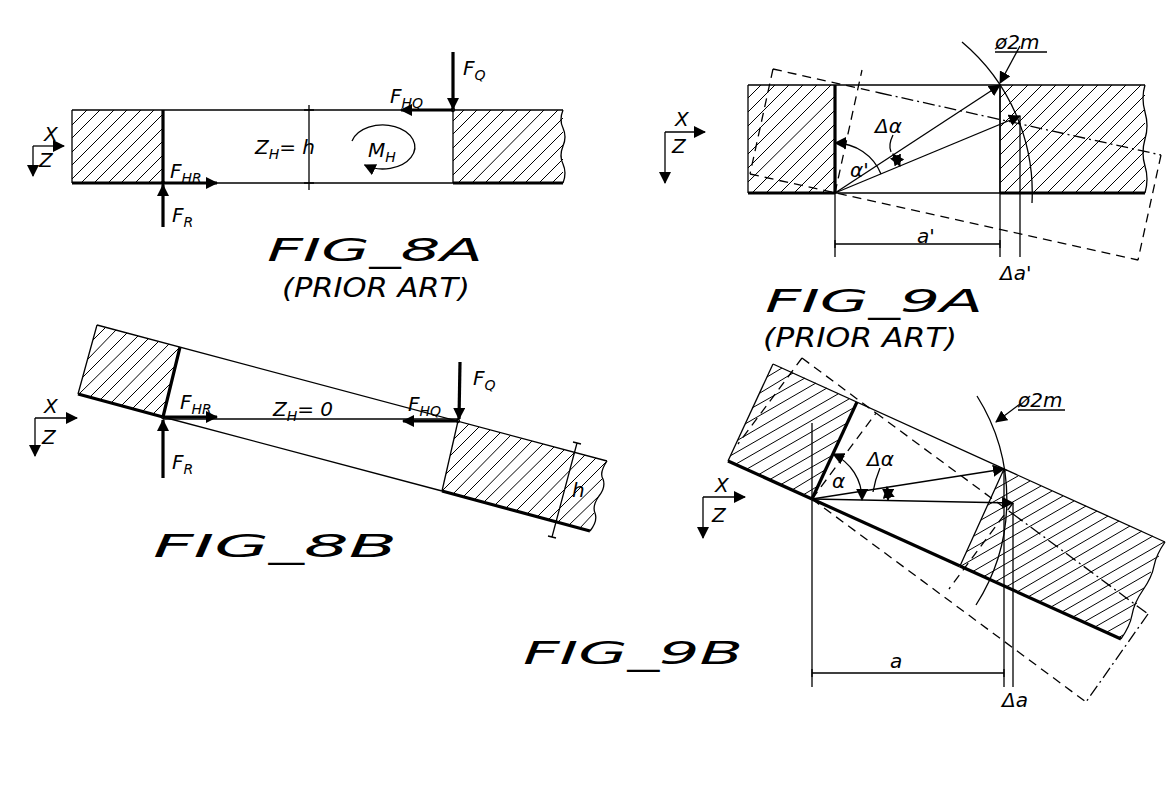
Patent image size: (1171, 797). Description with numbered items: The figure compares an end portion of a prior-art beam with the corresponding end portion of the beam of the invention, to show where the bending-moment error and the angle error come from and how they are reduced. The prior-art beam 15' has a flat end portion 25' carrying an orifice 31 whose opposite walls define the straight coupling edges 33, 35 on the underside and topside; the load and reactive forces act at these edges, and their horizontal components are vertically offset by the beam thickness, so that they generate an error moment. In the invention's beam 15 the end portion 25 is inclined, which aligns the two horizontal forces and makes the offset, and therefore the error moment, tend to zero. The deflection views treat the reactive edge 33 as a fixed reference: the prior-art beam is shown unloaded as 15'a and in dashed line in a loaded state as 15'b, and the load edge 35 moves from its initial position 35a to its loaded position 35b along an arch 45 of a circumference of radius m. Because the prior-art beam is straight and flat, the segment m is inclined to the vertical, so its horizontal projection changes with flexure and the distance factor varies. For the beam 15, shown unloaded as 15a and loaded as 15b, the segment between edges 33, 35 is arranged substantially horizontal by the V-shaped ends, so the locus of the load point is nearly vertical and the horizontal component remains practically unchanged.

In FIG. 8B, the beam 15 is at (342, 429).
In FIG. 8A, the prior art beam 15' is at (317, 146).
In FIG. 9B, the beam in unloaded state 15a is at (1121, 523).
In FIG. 9A, the prior art beam in unloaded state 15'a is at (1085, 124).
In FIG. 9B, the beam in loaded state 15b is at (1085, 667).
In FIG. 9A, the prior art beam in loaded state 15'b is at (955, 178).
In FIG. 8B, the end portion 25 is at (342, 428).
In FIG. 9B, the end portion 25 is at (791, 496).
In FIG. 8A, the prior art end portion 25' is at (318, 115).
In FIG. 9A, the prior art end portion 25' is at (791, 106).
In FIG. 8A, the orifice 31 is at (341, 178).
In FIG. 8B, the orifice 31 is at (309, 448).
In FIG. 9A, the orifice 31 is at (936, 90).
In FIG. 9B, the orifice 31 is at (915, 448).
In FIG. 8A, the coupling edge 33 is at (157, 187).
In FIG. 8B, the coupling edge 33 is at (161, 419).
In FIG. 9A, the coupling edge 33 is at (833, 195).
In FIG. 9B, the coupling edge 33 is at (810, 503).
In FIG. 8A, the coupling edge 35 is at (455, 111).
In FIG. 8B, the coupling edge 35 is at (463, 420).
In FIG. 9A, the load coupling point in unloaded position 35a is at (1003, 86).
In FIG. 9B, the load coupling point in unloaded position 35a is at (1006, 468).
In FIG. 9A, the load coupling point in loaded position 35b is at (1022, 115).
In FIG. 9B, the load coupling point in loaded position 35b is at (1015, 503).
In FIG. 9A, the arch 45 is at (994, 79).
In FIG. 9B, the arch 45 is at (1001, 442).